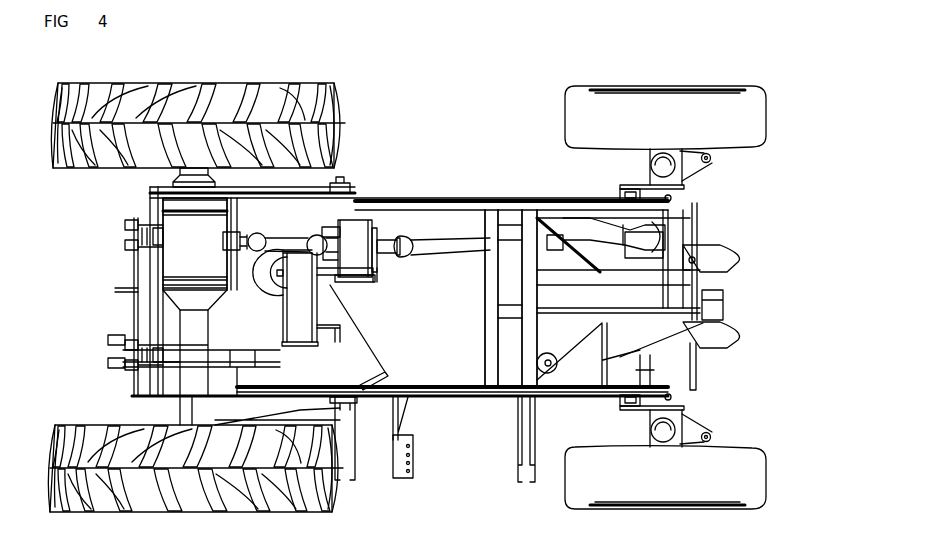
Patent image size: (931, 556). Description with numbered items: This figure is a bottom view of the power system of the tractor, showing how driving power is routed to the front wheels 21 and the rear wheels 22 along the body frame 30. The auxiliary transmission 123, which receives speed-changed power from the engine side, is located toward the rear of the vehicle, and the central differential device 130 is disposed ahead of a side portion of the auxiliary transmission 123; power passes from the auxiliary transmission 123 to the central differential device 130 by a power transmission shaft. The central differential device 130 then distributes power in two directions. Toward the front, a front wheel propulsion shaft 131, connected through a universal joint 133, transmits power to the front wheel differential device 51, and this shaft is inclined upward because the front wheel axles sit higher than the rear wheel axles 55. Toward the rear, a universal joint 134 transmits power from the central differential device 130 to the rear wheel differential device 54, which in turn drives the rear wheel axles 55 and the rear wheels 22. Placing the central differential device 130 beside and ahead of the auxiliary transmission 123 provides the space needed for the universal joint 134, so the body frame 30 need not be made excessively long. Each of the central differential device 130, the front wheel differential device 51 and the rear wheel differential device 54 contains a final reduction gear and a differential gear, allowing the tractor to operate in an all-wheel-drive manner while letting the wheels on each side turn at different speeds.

The front wheels 21 is at (600, 118).
The rear wheels 22 is at (310, 105).
The body frame 30 is at (463, 392).
The front wheel differential device 51 is at (655, 238).
The rear wheel differential device 54 is at (185, 254).
The rear wheel axles 55 is at (195, 335).
The auxiliary transmission 123 is at (303, 302).
The central differential device 130 is at (358, 226).
The front wheel propulsion shaft 131 is at (491, 195).
The universal joint 133 is at (438, 192).
The universal joint 134 is at (312, 190).